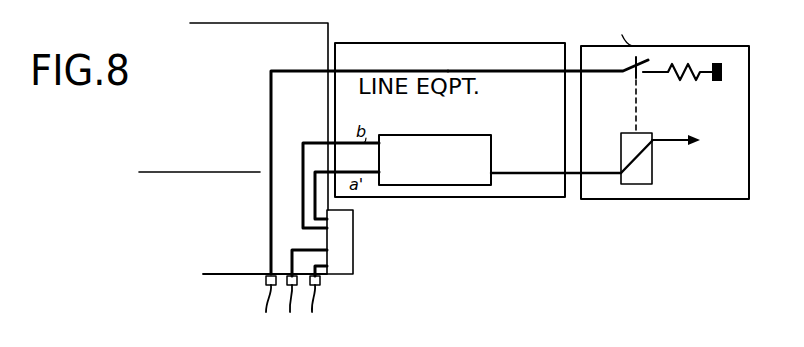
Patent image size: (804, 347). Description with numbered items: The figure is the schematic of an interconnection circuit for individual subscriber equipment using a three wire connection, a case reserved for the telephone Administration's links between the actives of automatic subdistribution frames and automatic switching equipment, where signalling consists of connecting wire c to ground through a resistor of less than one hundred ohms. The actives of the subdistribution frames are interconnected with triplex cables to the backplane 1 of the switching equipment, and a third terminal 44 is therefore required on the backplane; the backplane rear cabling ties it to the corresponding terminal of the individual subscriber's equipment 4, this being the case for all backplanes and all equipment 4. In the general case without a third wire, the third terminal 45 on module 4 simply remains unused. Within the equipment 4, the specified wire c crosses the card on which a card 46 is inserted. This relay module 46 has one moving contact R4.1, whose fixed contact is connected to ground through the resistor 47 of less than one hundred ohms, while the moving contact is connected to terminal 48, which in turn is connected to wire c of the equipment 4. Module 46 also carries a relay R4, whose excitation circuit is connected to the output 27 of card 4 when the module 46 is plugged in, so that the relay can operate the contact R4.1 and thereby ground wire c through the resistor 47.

The backplane 1 is at (232, 250).
The third terminal 44 is at (266, 278).
The third terminal 45 is at (328, 76).
The terminal 48 is at (567, 74).
The output 27 is at (531, 163).
The individual subscriber's equipment 4 is at (482, 197).
The card 46 is at (667, 199).
The resistor 47 is at (685, 81).
The moving contact R4.1 is at (632, 73).
The relay R4 is at (652, 170).